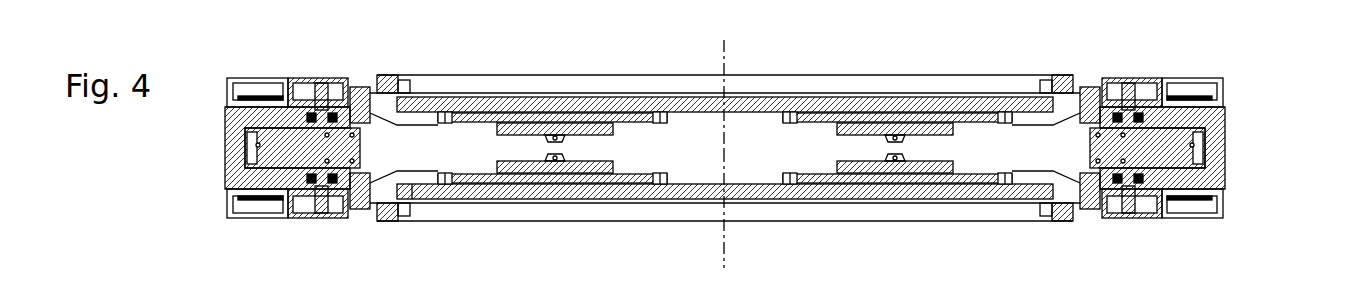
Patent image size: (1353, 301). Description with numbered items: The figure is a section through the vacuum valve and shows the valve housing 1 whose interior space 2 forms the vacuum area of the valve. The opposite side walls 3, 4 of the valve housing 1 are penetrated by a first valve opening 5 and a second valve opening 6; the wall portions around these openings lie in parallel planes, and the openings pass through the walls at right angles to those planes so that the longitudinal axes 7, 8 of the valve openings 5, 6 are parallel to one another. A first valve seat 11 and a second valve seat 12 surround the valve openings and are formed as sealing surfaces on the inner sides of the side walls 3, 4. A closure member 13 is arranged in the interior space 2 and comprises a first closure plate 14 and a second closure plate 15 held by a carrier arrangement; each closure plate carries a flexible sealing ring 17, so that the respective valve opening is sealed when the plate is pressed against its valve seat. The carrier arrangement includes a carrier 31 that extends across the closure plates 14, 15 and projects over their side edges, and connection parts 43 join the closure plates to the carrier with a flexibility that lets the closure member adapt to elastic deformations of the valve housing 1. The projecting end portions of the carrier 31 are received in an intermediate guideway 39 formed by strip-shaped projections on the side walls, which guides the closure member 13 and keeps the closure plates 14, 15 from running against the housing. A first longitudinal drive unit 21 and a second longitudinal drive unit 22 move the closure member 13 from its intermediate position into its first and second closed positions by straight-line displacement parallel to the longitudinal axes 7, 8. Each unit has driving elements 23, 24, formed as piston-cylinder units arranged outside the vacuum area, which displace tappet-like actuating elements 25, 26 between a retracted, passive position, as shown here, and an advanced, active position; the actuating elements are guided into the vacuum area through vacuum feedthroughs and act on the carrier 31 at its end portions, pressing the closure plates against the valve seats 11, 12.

The valve housing 1 is at (387, 223).
The interior space 2 is at (378, 108).
The side wall 3 is at (1055, 217).
The side wall 4 is at (1063, 110).
The first valve opening 5 is at (468, 213).
The second valve opening 6 is at (553, 87).
The longitudinal axis 7 is at (728, 240).
The longitudinal axis 8 is at (722, 42).
The first valve seat 11 is at (412, 198).
The second valve seat 12 is at (417, 100).
The closure member 13 is at (1072, 107).
The first closure plate 14 is at (968, 196).
The second closure plate 15 is at (753, 110).
The flexible sealing ring 17 is at (1048, 100).
The first longitudinal drive unit 21 is at (318, 223).
The second longitudinal drive unit 22 is at (302, 72).
The driving element 23 is at (295, 200).
The driving element 24 is at (325, 80).
The actuating element 25 is at (315, 187).
The actuating element 26 is at (320, 112).
The carrier 31 is at (382, 182).
The intermediate guideway 39 is at (1220, 187).
The connection part 43 is at (972, 170).